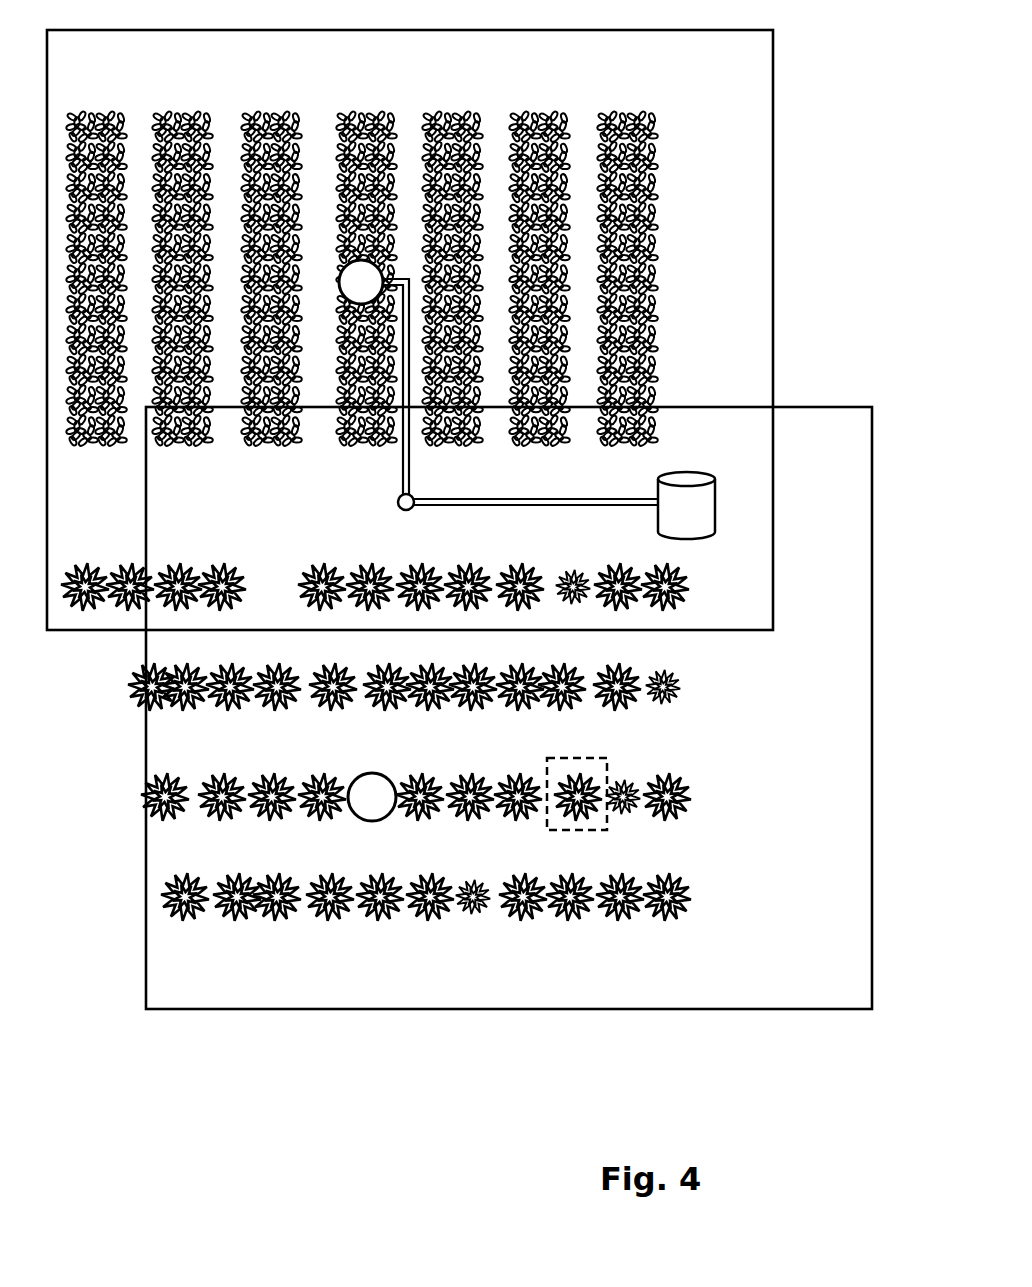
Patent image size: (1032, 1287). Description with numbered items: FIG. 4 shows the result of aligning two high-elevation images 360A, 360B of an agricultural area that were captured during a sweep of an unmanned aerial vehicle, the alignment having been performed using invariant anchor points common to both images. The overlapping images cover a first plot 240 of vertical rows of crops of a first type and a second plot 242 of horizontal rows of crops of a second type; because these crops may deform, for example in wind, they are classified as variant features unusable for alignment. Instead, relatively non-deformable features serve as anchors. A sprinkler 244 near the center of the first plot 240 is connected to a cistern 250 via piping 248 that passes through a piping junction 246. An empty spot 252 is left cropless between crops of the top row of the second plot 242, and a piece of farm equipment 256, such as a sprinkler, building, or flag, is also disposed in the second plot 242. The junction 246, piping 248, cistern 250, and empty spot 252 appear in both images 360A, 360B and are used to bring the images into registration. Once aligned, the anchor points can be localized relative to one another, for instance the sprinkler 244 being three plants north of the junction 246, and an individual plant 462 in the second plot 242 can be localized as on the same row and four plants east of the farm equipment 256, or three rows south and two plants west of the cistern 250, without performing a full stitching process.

The first high-elevation image 360A is at (773, 185).
The second high-elevation image 360B is at (405, 1010).
The first plot 240 is at (703, 268).
The second plot 242 is at (715, 762).
The sprinkler 244 is at (345, 270).
The piping junction 246 is at (398, 498).
The piping 248 is at (485, 498).
The cistern 250 is at (685, 472).
The empty spot 252 is at (284, 554).
The farm equipment 256 is at (384, 760).
The plant 462 is at (607, 832).